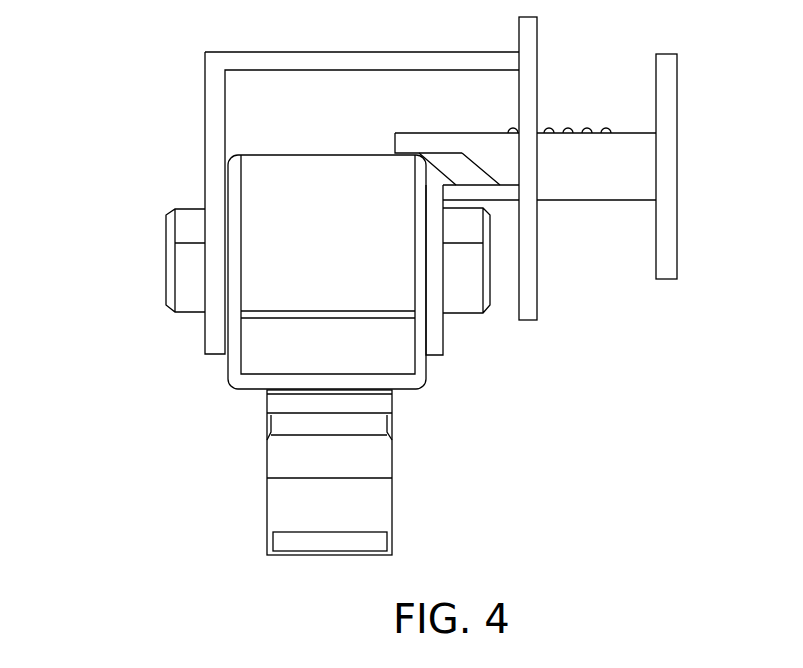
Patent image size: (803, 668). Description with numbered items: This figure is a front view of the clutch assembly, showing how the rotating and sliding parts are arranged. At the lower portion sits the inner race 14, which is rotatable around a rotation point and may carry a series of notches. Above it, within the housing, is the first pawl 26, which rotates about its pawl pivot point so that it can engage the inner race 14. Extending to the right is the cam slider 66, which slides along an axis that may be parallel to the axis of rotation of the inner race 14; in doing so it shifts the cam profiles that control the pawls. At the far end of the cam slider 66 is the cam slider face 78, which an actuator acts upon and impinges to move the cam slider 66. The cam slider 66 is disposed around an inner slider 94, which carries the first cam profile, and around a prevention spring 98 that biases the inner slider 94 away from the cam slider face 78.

The inner race 14 is at (378, 507).
The first pawl 26 is at (253, 179).
The cam slider 66 is at (591, 182).
The cam slider face 78 is at (665, 107).
The inner slider 94 is at (458, 167).
The prevention spring 98 is at (587, 128).